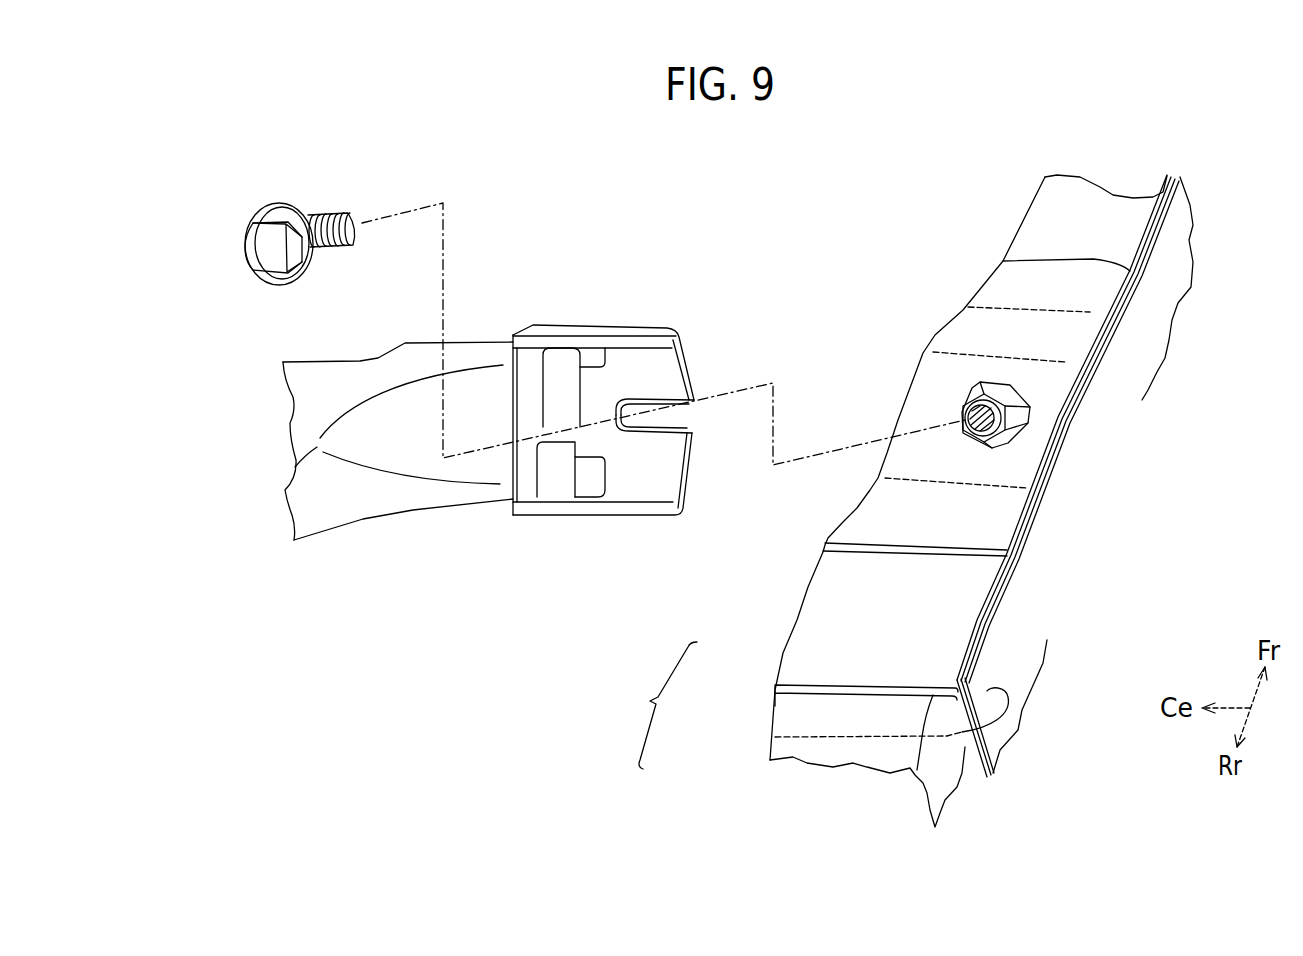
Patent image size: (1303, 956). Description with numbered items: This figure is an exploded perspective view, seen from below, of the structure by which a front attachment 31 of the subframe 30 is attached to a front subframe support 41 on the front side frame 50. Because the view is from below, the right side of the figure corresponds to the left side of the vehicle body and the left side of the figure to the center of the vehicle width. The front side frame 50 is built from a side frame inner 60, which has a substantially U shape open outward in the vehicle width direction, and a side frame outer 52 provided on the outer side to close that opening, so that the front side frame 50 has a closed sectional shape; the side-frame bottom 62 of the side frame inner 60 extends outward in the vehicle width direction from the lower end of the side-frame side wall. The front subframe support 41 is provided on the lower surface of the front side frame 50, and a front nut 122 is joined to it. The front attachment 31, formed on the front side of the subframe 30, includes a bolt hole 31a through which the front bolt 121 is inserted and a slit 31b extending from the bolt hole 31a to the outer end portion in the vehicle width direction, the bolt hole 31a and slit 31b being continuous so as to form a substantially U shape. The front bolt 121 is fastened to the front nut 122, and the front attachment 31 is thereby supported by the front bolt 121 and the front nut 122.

The front bolt 121 is at (262, 243).
The subframe 30 is at (368, 517).
The front attachment 31 is at (637, 423).
The bolt hole 31a is at (619, 402).
The slit 31b is at (683, 418).
The front subframe support 41 is at (933, 333).
The front nut 122 is at (1012, 385).
The side-frame bottom 62 is at (868, 637).
The side frame inner 60 is at (785, 650).
The side frame outer 52 is at (773, 737).
The front side frame 50 is at (657, 705).